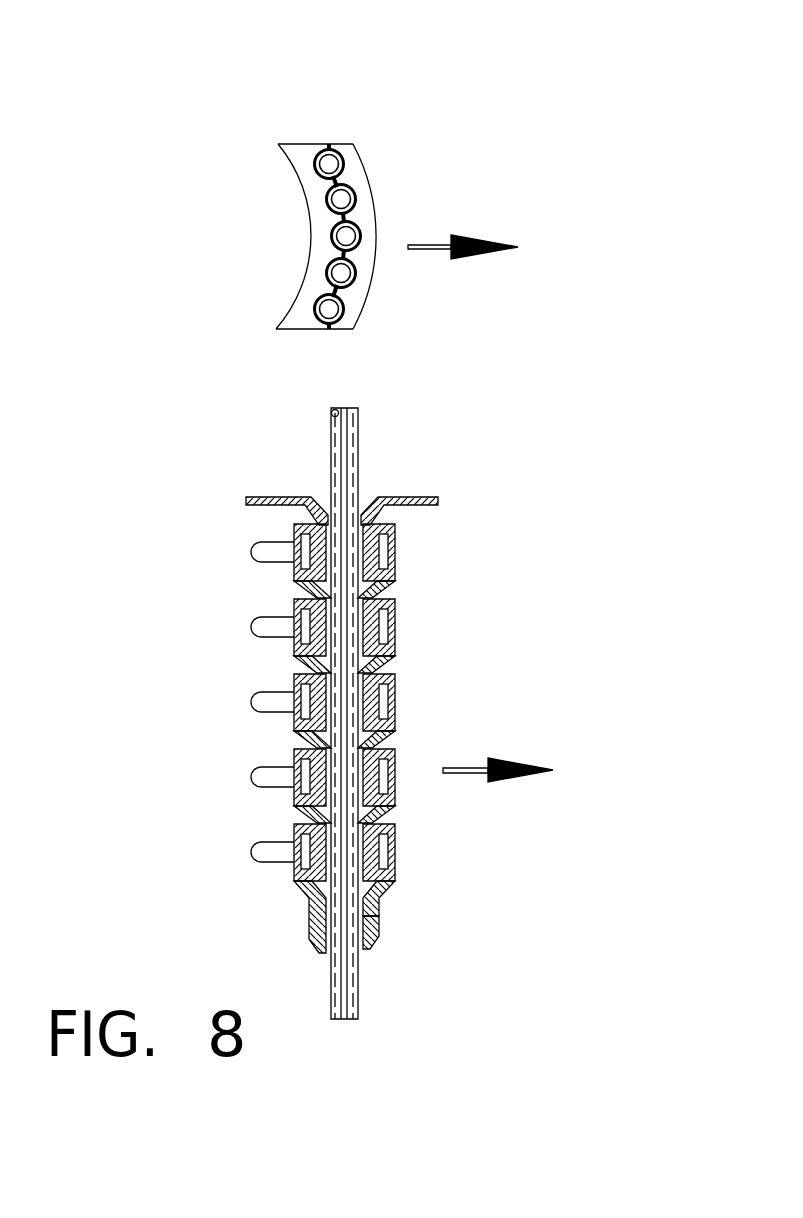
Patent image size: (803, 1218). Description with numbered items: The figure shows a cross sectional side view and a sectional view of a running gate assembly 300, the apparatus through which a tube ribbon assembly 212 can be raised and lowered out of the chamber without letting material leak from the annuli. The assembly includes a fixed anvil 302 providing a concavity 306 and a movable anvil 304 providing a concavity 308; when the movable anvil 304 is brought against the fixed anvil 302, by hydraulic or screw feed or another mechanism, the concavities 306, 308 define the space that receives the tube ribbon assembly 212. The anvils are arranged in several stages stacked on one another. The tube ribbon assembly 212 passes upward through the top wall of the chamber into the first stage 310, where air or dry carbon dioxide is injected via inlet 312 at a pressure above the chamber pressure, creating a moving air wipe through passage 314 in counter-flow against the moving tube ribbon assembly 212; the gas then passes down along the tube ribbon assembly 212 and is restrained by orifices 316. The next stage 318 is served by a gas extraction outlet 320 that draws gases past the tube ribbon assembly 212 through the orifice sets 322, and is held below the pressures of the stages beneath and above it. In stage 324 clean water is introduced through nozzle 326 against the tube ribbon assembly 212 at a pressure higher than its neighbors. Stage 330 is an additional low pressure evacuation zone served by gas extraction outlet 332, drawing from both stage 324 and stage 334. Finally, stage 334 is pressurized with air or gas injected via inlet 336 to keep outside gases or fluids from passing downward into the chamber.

The running gate assembly 300 is at (421, 125).
The tube ribbon assembly 212 is at (328, 160).
The fixed anvil 302 is at (287, 289).
The movable anvil 304 is at (358, 295).
The concavity 306 is at (313, 222).
The concavity 308 is at (355, 233).
The first stage 310 is at (373, 880).
The inlet 312 is at (250, 862).
The passage 314 is at (315, 900).
The orifices 316 is at (363, 933).
The stage 318 is at (383, 787).
The gas extraction outlet 320 is at (250, 787).
The orifice sets 322 is at (383, 863).
The stage 324 is at (383, 703).
The nozzle 326 is at (247, 707).
The stage 330 is at (383, 637).
The gas extraction outlet 332 is at (248, 632).
The stage 334 is at (382, 573).
The inlet 336 is at (248, 557).